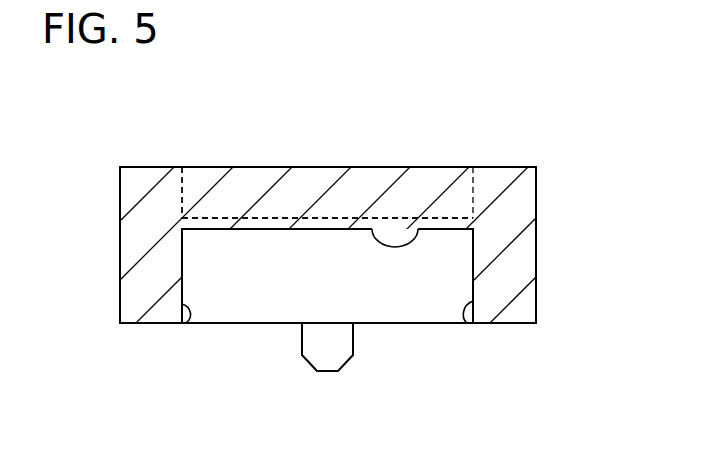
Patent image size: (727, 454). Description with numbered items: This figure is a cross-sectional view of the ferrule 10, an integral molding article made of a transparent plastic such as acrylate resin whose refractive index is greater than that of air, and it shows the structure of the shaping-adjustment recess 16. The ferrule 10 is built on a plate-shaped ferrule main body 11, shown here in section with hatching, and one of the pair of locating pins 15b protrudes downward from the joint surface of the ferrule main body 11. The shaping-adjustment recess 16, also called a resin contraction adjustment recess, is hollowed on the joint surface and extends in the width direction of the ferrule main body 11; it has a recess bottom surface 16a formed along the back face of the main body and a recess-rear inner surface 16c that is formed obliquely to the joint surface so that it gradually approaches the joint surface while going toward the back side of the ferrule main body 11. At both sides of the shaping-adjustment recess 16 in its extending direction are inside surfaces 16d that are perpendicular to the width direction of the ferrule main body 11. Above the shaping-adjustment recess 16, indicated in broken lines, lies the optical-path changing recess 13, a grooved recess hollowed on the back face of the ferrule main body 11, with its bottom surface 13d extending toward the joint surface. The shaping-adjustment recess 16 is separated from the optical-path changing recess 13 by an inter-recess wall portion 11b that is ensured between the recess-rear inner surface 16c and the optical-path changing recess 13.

The ferrule 10 is at (499, 160).
The ferrule main body 11 is at (536, 205).
The inter-recess wall portion 11b is at (312, 218).
The optical-path changing recess 13 is at (368, 193).
The bottom surface 13d is at (223, 218).
The locating pin 15b is at (353, 332).
The shaping-adjustment recess 16 is at (275, 307).
The recess bottom surface 16a is at (407, 228).
The recess-rear inner surface 16c is at (250, 275).
The inside surfaces 16d is at (186, 323).